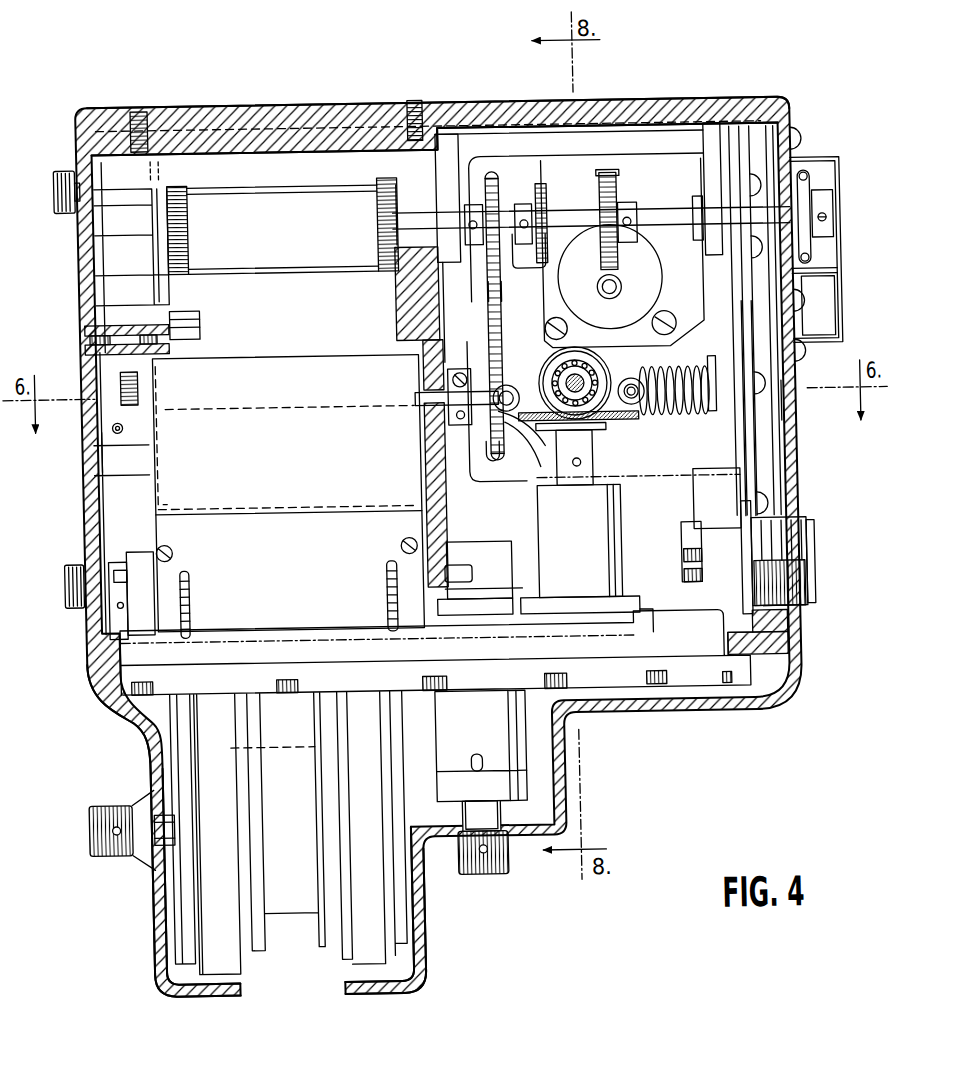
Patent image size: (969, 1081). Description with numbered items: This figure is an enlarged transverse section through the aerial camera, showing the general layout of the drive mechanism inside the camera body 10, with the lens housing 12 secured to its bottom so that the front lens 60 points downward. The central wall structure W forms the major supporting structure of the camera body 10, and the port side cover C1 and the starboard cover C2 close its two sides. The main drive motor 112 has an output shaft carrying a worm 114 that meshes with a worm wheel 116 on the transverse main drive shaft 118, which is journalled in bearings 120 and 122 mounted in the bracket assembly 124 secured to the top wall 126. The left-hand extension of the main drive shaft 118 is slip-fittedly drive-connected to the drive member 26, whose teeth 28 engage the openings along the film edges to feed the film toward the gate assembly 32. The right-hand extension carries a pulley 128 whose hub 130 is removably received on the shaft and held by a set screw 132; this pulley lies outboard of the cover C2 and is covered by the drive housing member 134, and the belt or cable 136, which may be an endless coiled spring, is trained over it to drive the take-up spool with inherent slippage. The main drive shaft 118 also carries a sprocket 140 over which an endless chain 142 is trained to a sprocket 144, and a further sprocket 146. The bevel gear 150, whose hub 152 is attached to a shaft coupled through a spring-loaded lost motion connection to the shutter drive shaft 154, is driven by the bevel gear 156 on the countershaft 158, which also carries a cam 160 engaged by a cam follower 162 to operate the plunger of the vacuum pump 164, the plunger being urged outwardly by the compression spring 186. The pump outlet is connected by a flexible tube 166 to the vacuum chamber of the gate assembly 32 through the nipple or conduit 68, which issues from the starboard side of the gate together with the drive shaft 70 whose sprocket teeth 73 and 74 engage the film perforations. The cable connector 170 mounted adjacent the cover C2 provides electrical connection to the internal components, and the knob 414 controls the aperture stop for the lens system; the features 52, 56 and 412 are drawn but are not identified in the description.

The camera body 10 is at (772, 90).
The lens housing 12 is at (158, 990).
The drive member 26 is at (292, 206).
The teeth 28 is at (184, 185).
The gate assembly 32 is at (300, 355).
The compartment 52 is at (301, 509).
The bracket 56 is at (112, 614).
The front lens 60 is at (293, 880).
The conduit 68 is at (428, 399).
The drive shaft 70 is at (458, 571).
The sprocket teeth 73 is at (384, 582).
The sprocket teeth 74 is at (188, 605).
The main drive motor 112 is at (700, 288).
The worm 114 is at (618, 293).
The worm wheel 116 is at (606, 181).
The main drive shaft 118 is at (648, 214).
The bearing 120 is at (460, 180).
The bearing 122 is at (701, 176).
The bracket assembly 124 is at (598, 137).
The top wall 126 is at (688, 113).
The pulley 128 is at (815, 185).
The hub 130 is at (833, 191).
The set screw 132 is at (827, 216).
The drive housing member 134 is at (831, 305).
The belt or cable 136 is at (799, 162).
The sprocket 140 is at (508, 178).
The endless chain 142 is at (501, 292).
The sprocket 144 is at (486, 452).
The sprocket 146 is at (548, 205).
The bevel gear 150 is at (630, 425).
The hub 152 is at (586, 470).
The shutter drive shaft 154 is at (596, 550).
The bevel gear 156 is at (571, 372).
The countershaft 158 is at (590, 362).
The cam 160 is at (638, 375).
The cam follower 162 is at (662, 376).
The vacuum pump 164 is at (762, 458).
The flexible tube 166 is at (545, 444).
The cable connector 170 is at (810, 505).
The compression spring 186 is at (690, 385).
The knob 412 is at (497, 870).
The knob 414 is at (110, 804).
The central wall structure W is at (410, 366).
The side cover C1 is at (89, 448).
The cover C2 is at (790, 400).